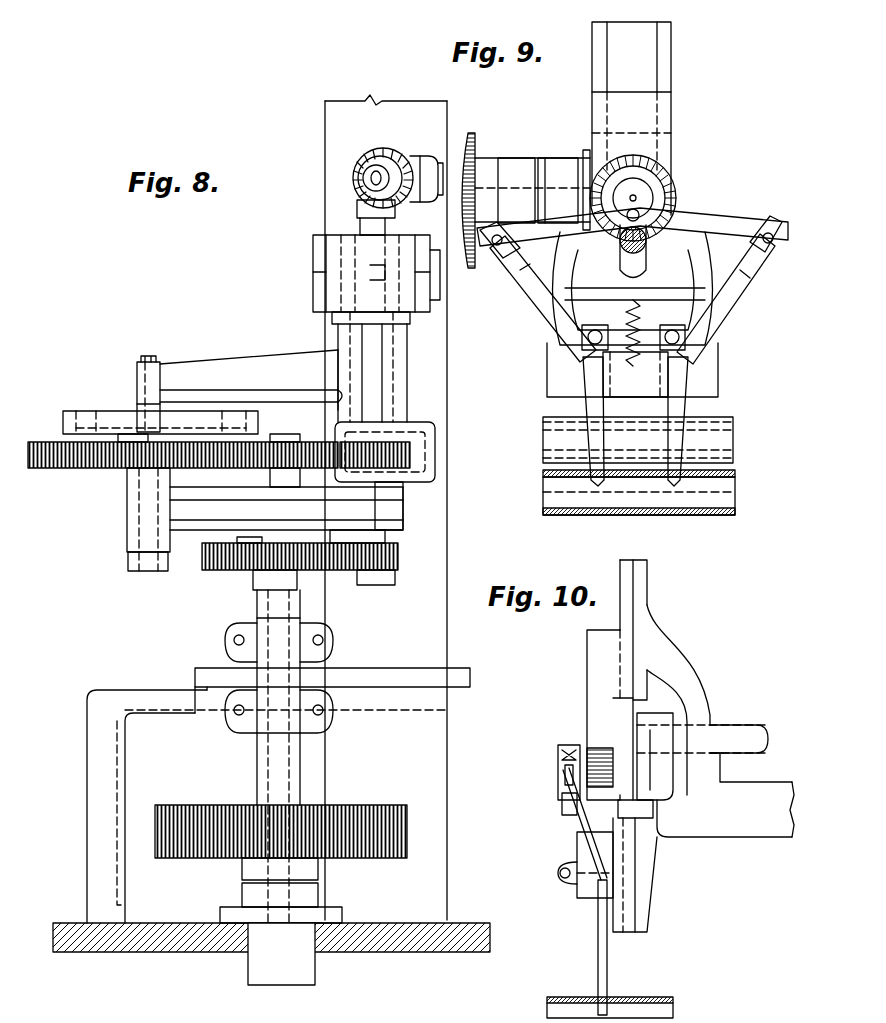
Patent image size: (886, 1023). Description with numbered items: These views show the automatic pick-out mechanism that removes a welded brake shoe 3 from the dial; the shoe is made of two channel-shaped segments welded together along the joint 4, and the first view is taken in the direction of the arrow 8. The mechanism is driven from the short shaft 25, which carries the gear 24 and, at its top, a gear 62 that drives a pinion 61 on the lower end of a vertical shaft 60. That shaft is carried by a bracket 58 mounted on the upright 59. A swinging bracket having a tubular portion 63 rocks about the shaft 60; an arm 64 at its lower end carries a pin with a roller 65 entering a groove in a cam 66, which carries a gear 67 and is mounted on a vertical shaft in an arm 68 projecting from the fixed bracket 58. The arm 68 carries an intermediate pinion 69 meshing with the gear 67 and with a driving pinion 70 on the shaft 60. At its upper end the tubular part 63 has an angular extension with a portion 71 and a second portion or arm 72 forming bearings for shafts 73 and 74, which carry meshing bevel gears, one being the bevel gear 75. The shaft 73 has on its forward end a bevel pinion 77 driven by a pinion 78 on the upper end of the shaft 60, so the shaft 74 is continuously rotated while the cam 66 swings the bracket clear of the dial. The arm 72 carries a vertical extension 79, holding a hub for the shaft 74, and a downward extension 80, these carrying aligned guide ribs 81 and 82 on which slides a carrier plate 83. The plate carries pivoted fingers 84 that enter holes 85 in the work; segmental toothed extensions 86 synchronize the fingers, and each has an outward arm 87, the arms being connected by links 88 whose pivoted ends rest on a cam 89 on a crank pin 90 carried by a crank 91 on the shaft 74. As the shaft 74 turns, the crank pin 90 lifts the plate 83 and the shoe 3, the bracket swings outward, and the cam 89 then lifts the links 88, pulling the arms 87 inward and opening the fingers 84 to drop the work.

In FIG. 9, the brake shoe 3 is at (728, 418).
In FIG. 10, the brake shoe 3 is at (672, 1004).
In FIG. 9, the joint 4 is at (735, 490).
In FIG. 10, the arrow 8 is at (585, 830).
In FIG. 8, the gear 24 is at (398, 808).
In FIG. 8, the short shaft 25 is at (300, 770).
In FIG. 8, the bracket 58 is at (403, 508).
In FIG. 8, the upright 59 is at (372, 101).
In FIG. 8, the vertical shaft 60 is at (385, 347).
In FIG. 8, the pinion 61 is at (398, 558).
In FIG. 8, the gear 62 is at (236, 572).
In FIG. 8, the tubular portion 63 is at (400, 388).
In FIG. 8, the arm 64 is at (205, 372).
In FIG. 8, the roller 65 is at (138, 408).
In FIG. 8, the cam 66 is at (63, 420).
In FIG. 8, the gear 67 is at (84, 470).
In FIG. 8, the arm 68 is at (265, 519).
In FIG. 8, the intermediate pinion 69 is at (296, 442).
In FIG. 8, the driving pinion 70 is at (412, 452).
In FIG. 8, the portion 71 is at (435, 290).
In FIG. 9, the portion 71 is at (530, 160).
In FIG. 10, the arm 72 is at (770, 785).
In FIG. 9, the shaft 73 is at (510, 185).
In FIG. 9, the shaft 74 is at (646, 190).
In FIG. 10, the shaft 74 is at (740, 728).
In FIG. 8, the bevel gear 75 is at (372, 176).
In FIG. 9, the bevel gear 75 is at (585, 158).
In FIG. 8, the bevel pinion 77 is at (366, 150).
In FIG. 9, the bevel pinion 77 is at (470, 133).
In FIG. 8, the pinion 78 is at (357, 215).
In FIG. 9, the vertical extension 79 is at (672, 72).
In FIG. 10, the vertical extension 79 is at (690, 668).
In FIG. 10, the downward extension 80 is at (640, 886).
In FIG. 9, the guide rib 81 is at (629, 62).
In FIG. 10, the guide rib 81 is at (620, 612).
In FIG. 10, the guide rib 82 is at (632, 812).
In FIG. 9, the carrier plate 83 is at (690, 250).
In FIG. 10, the carrier plate 83 is at (598, 660).
In FIG. 9, the fingers 84 is at (676, 400).
In FIG. 10, the fingers 84 is at (608, 960).
In FIG. 9, the holes 85 is at (676, 470).
In FIG. 10, the holes 85 is at (612, 1000).
In FIG. 9, the segmental toothed extensions 86 is at (633, 368).
In FIG. 9, the outward arm 87 is at (742, 292).
In FIG. 9, the links 88 is at (742, 228).
In FIG. 10, the links 88 is at (560, 780).
In FIG. 9, the cam 89 is at (652, 266).
In FIG. 10, the cam 89 is at (565, 803).
In FIG. 9, the crank pin 90 is at (622, 246).
In FIG. 10, the crank pin 90 is at (600, 750).
In FIG. 9, the crank 91 is at (520, 276).
In FIG. 10, the crank 91 is at (645, 788).